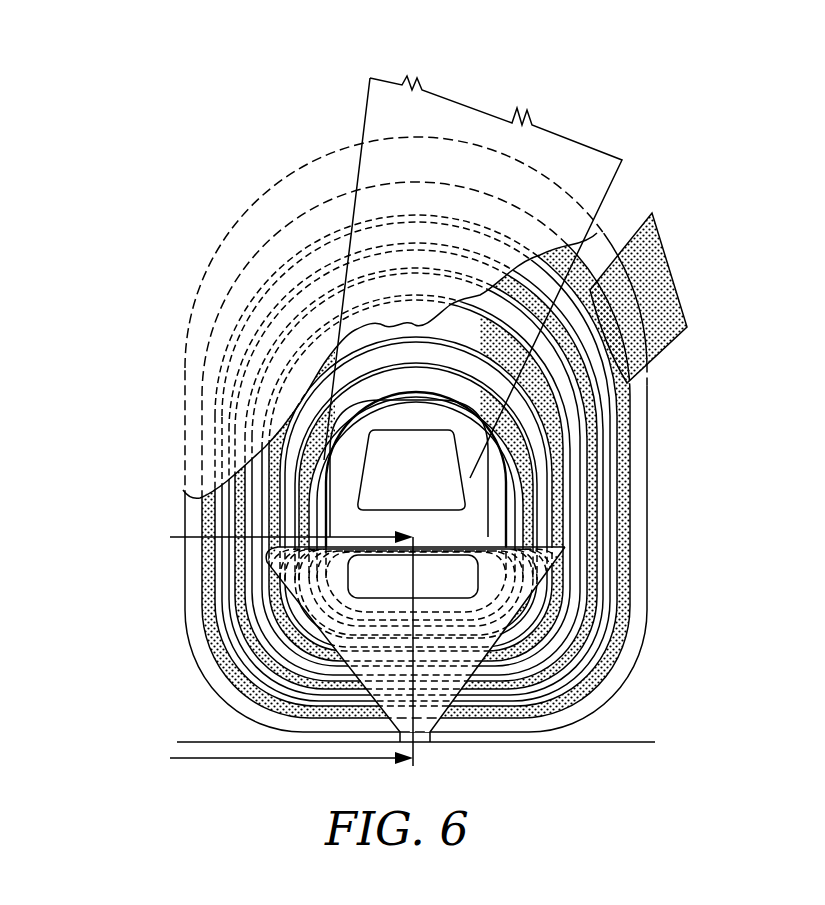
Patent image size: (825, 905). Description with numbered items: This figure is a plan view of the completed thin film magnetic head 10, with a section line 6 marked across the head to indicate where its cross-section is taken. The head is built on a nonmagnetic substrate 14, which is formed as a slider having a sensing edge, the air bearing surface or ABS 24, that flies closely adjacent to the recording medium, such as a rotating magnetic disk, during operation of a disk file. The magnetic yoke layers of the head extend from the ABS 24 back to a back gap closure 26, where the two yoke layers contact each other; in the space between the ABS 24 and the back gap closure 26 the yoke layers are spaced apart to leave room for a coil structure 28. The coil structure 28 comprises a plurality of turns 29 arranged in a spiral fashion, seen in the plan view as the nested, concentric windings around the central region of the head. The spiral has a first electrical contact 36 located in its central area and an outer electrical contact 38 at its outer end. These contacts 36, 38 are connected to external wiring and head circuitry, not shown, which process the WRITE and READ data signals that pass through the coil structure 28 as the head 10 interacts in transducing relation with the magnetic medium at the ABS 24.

The section line 6- 6 is at (282, 650).
The thin film magnetic head 10 is at (458, 440).
The nonmagnetic substrate 14 is at (628, 733).
The air bearing surface (ABS) 24 is at (523, 742).
The back gap closure 26 is at (381, 592).
The coil structure 28 is at (617, 481).
The turns 29 is at (613, 530).
The first electrical contact 36 is at (422, 483).
The outer electrical contact 38 is at (662, 255).